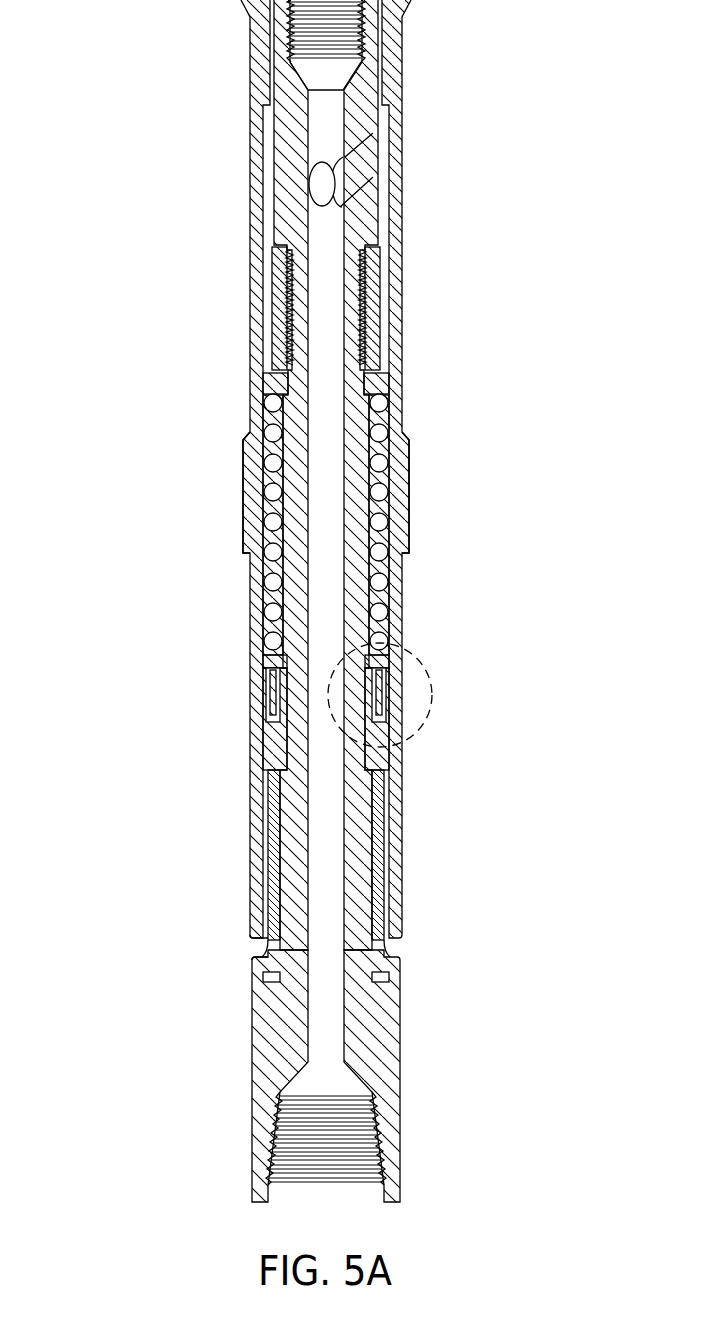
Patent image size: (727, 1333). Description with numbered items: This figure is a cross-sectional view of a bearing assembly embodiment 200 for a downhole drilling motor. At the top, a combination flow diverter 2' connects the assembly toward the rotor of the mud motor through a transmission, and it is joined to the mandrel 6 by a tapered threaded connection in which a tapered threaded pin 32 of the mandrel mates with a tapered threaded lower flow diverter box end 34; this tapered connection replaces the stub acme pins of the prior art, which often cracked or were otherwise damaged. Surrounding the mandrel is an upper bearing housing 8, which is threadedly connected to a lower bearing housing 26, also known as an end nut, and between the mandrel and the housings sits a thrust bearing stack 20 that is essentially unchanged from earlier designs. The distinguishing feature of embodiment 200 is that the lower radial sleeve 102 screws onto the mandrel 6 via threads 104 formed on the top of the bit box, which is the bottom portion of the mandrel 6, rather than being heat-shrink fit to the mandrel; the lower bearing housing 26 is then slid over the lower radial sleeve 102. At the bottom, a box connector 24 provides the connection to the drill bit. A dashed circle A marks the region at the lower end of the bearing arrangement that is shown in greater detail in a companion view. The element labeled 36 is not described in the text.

The bearing assembly embodiment 200 is at (157, 48).
The combination flow diverter 2' is at (377, 130).
The tapered threaded pin 32 is at (297, 308).
The tapered threaded lower flow diverter box end 34 is at (370, 323).
The sleeve 36 is at (268, 350).
The mandrel 6 is at (350, 404).
The upper bearing housing 8 is at (398, 490).
The thrust bearing stack 20 is at (275, 540).
The detail region A is at (418, 655).
The lower bearing housing 26 is at (398, 905).
The lower radial sleeve 102 is at (250, 954).
The threads 104 is at (398, 990).
The box connector 24 is at (387, 1160).